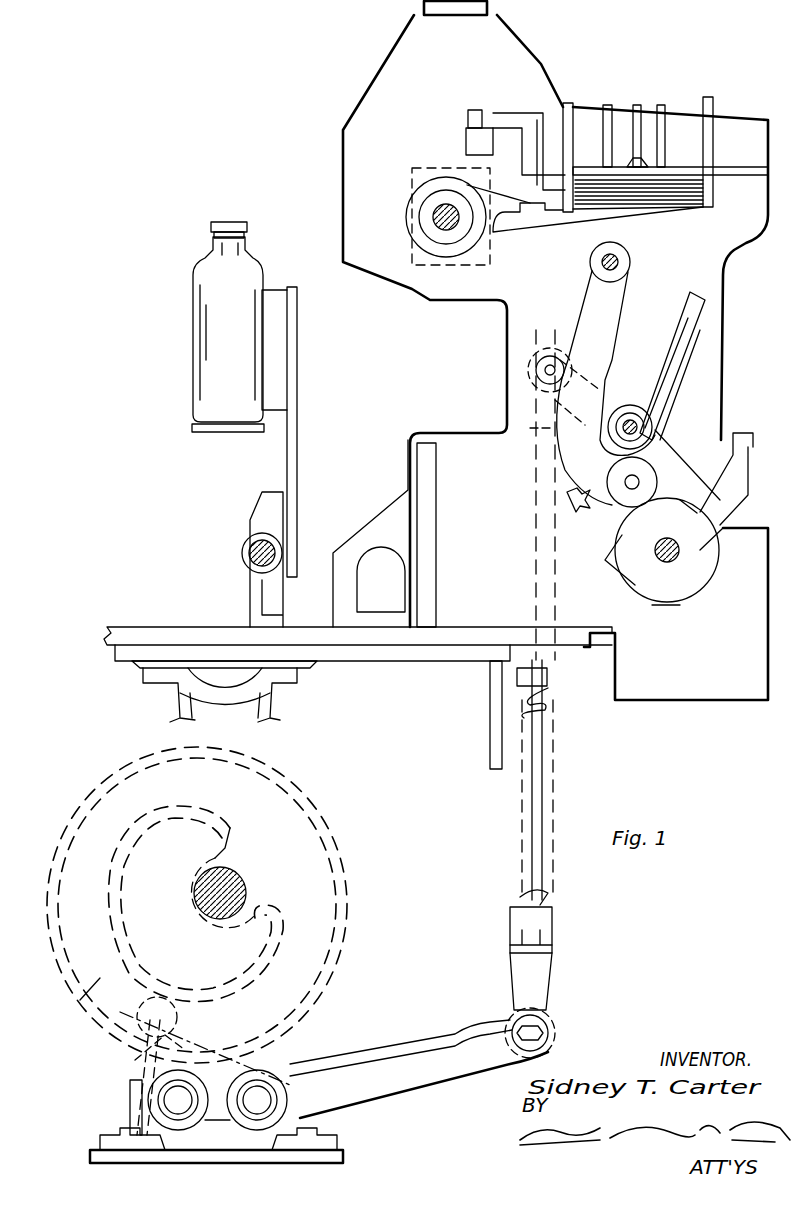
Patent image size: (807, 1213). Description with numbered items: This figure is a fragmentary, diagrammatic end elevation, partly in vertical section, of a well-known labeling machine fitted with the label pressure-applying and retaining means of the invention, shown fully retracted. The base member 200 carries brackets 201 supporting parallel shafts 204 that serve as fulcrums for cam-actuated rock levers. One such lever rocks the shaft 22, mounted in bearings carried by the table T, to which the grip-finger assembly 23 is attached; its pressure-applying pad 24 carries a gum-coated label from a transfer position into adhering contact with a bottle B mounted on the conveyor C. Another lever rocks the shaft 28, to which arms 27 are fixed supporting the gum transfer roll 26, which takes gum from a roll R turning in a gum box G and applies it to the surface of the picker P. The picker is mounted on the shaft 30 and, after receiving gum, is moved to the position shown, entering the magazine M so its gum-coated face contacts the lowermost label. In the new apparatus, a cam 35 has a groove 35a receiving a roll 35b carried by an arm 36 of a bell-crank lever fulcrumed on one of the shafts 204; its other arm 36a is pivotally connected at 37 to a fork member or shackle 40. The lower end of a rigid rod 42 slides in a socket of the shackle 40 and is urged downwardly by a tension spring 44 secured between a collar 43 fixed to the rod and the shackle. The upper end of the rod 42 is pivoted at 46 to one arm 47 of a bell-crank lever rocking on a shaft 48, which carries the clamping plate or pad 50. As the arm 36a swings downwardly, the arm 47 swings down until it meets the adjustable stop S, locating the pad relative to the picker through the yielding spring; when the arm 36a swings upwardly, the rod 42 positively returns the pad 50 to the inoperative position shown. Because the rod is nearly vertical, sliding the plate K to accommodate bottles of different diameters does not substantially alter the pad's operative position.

The magazine M is at (700, 90).
The picker P is at (560, 245).
The shaft 30 is at (433, 217).
The shaft 28 is at (618, 256).
The arms 27 is at (618, 322).
The clamping plate or pad 50 is at (700, 318).
The pivotal connection 46 is at (552, 360).
The arm 47 is at (620, 400).
The shaft 48 is at (628, 430).
The stop S is at (565, 500).
The gum transfer roll 26 is at (625, 505).
The gum box G is at (750, 525).
The roll R is at (690, 590).
The bottle B is at (205, 336).
The conveyor C is at (230, 432).
The pressure-applying pad 24 is at (278, 292).
The grip-finger assembly 23 is at (296, 423).
The shaft 22 is at (250, 563).
The plate K is at (492, 614).
The table T is at (440, 662).
The collar 43 is at (550, 680).
The tension spring 44 is at (552, 712).
The rigid rod 42 is at (530, 848).
The fork member or shackle 40 is at (548, 975).
The pivotal connection 37 is at (545, 1030).
The arm 36a is at (424, 1040).
The arm 36 is at (215, 1040).
The cam 35 is at (336, 944).
The groove 35a is at (94, 998).
The roll 35b is at (120, 1030).
The parallel shafts 204 is at (262, 1098).
The brackets 201 is at (335, 1140).
The base member 200 is at (342, 1158).